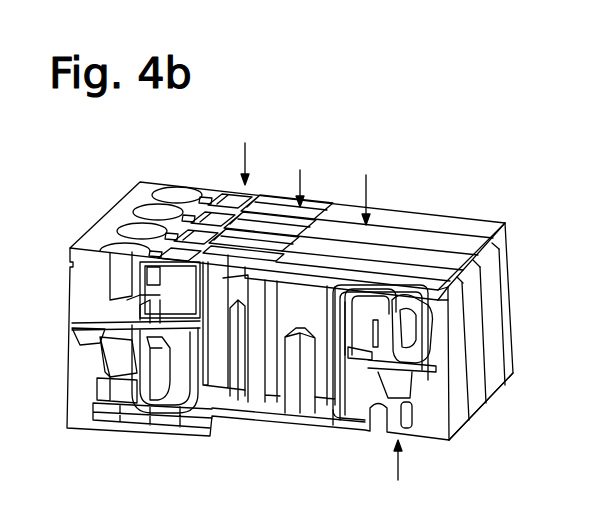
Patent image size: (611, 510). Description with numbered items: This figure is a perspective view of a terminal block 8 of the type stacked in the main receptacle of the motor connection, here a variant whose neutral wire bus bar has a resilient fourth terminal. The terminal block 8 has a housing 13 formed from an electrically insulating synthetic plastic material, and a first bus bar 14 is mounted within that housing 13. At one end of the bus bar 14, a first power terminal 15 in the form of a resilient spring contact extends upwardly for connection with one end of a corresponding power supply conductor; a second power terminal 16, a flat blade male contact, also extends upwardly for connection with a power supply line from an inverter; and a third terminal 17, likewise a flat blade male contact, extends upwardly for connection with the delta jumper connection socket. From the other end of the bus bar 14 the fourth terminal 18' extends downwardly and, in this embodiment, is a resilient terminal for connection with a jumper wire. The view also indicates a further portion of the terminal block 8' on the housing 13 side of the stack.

The terminal block 8 is at (316, 311).
The housing lower part 8' is at (509, 414).
The housing 13 is at (508, 333).
The bus bar 14 is at (214, 418).
The first power terminal 15 is at (139, 303).
The second power terminal 16 is at (235, 303).
The third terminal 17 is at (297, 350).
The terminal 18' is at (390, 387).